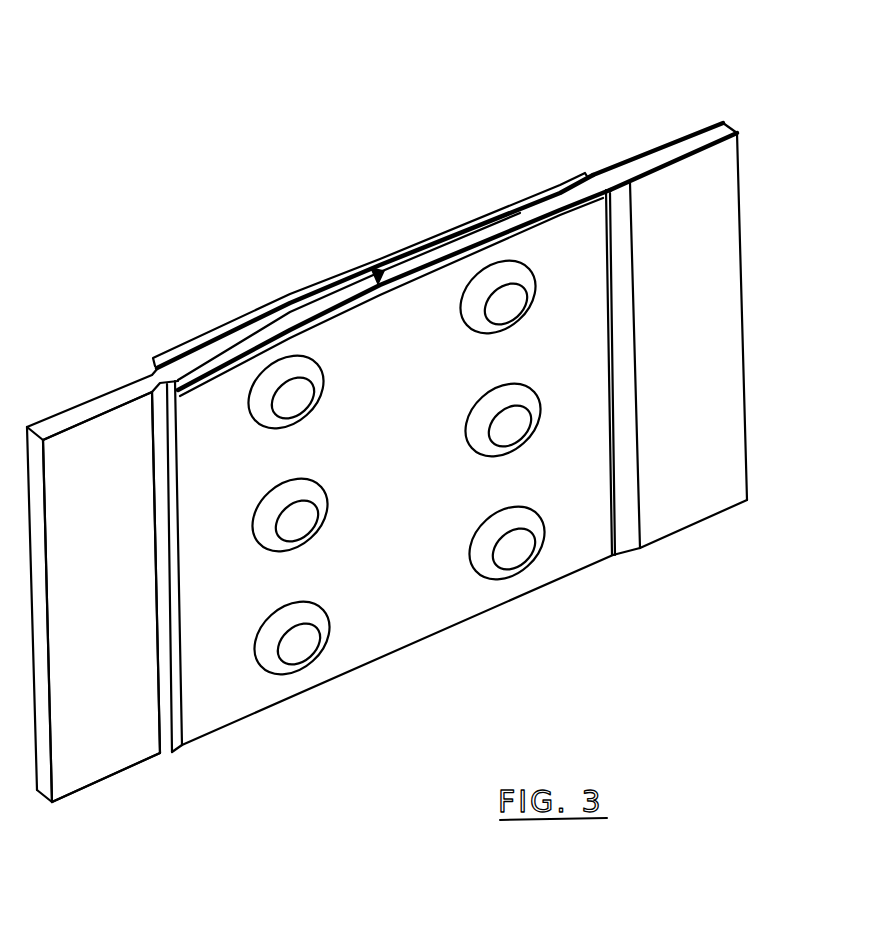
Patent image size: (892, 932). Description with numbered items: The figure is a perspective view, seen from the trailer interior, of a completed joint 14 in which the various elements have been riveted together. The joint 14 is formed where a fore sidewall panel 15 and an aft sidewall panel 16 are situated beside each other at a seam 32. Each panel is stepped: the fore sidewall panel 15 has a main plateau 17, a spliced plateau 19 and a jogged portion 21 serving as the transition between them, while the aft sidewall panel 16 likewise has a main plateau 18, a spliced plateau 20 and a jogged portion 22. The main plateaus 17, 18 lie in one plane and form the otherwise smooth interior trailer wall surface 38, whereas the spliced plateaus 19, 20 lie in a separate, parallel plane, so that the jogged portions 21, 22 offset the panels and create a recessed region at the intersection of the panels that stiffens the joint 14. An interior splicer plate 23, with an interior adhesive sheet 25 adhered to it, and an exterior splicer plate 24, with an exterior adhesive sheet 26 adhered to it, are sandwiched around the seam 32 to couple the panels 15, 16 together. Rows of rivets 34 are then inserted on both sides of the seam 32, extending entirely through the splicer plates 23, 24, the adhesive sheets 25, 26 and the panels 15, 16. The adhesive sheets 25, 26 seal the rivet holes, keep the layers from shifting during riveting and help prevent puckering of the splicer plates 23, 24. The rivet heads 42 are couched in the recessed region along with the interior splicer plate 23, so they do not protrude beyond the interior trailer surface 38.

The joint 14 is at (409, 99).
The fore sidewall panel 15 is at (638, 150).
The aft sidewall panel 16 is at (97, 798).
The main plateau 17 is at (706, 343).
The main plateau 18 is at (105, 586).
The spliced plateau 19 is at (498, 219).
The spliced plateau 20 is at (272, 327).
The jogged portion 21 is at (618, 205).
The jogged portion 22 is at (166, 740).
The interior splicer plate 23 is at (398, 444).
The exterior splicer plate 24 is at (367, 267).
The interior adhesive sheet 25 is at (426, 267).
The exterior adhesive sheet 26 is at (450, 231).
The seam 32 is at (379, 268).
The rivets 34 is at (309, 662).
The interior trailer wall surface 38 is at (108, 711).
The rivet heads 42 is at (312, 613).